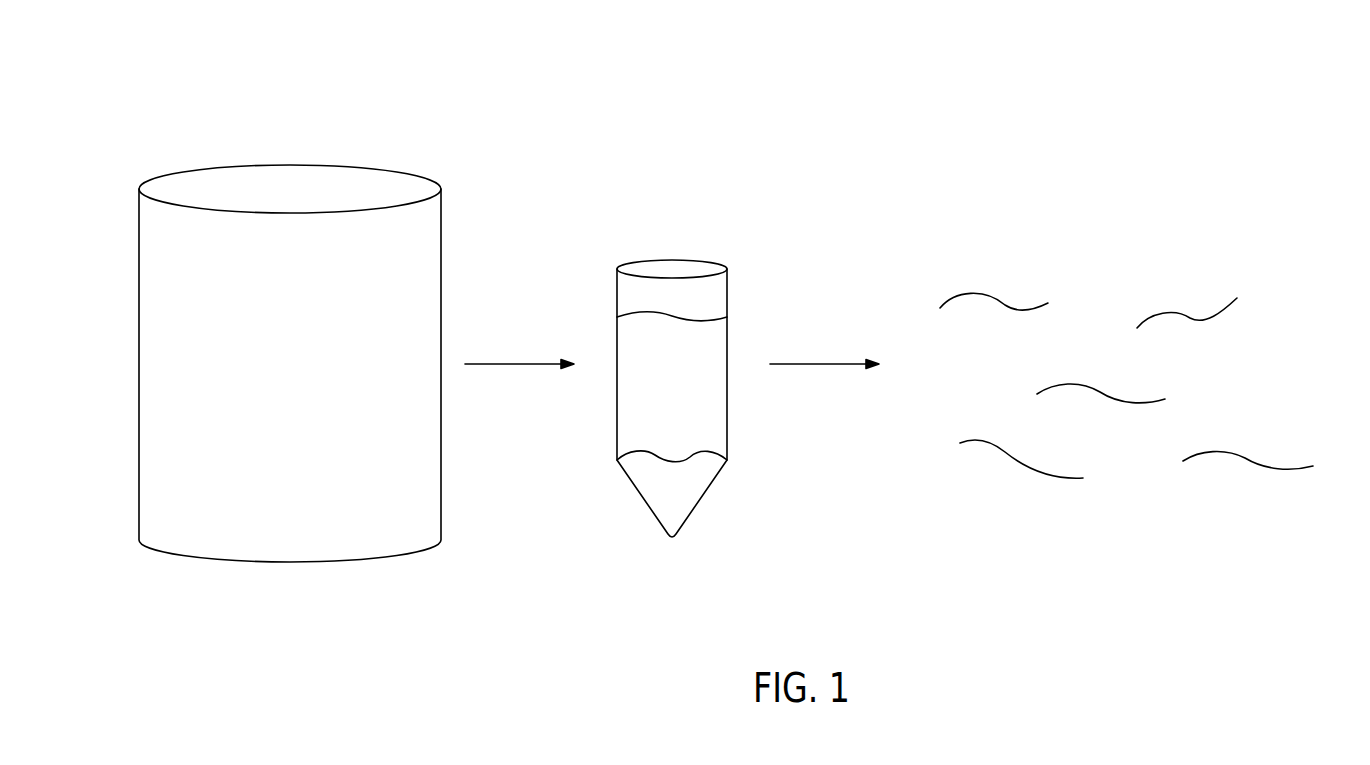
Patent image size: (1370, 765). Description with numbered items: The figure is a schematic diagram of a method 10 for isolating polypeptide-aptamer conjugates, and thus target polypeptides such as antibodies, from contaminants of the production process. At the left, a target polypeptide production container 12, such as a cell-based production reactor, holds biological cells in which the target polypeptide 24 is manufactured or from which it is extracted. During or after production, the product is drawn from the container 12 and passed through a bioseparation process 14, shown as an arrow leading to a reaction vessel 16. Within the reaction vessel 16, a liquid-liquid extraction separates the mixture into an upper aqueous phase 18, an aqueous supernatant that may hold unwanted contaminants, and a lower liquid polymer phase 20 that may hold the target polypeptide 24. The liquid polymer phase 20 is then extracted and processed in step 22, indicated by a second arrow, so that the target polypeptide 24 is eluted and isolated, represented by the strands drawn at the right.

The method 10 is at (1124, 129).
The target polypeptide production container 12 is at (371, 138).
The bioseparation process 14 is at (517, 361).
The reaction vessel 16 is at (672, 258).
The aqueous phase 18 is at (716, 368).
The liquid polymer phase 20 is at (647, 488).
The step 22 is at (823, 361).
The target polypeptide 24 is at (1003, 285).